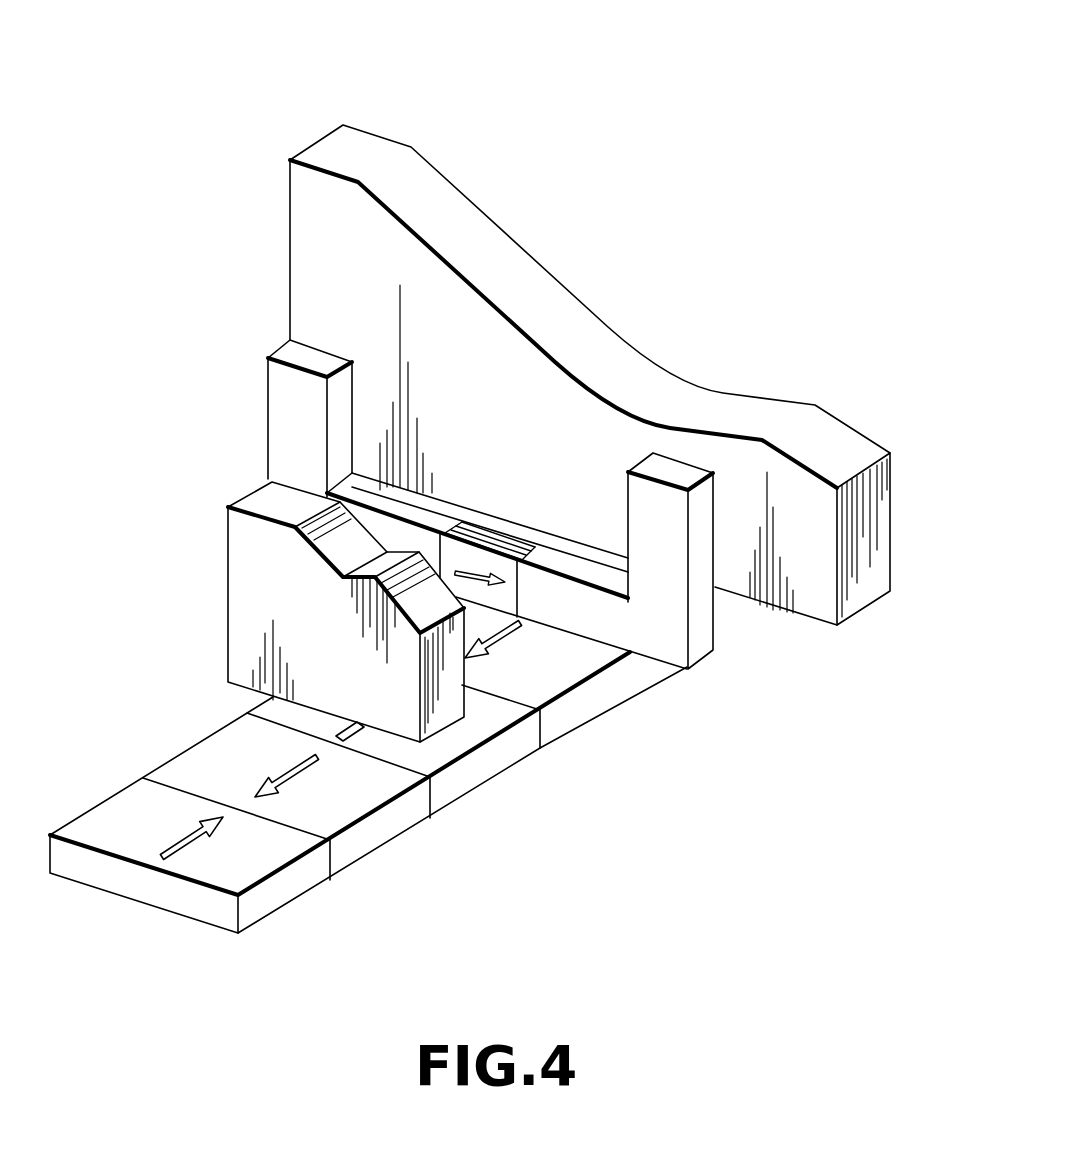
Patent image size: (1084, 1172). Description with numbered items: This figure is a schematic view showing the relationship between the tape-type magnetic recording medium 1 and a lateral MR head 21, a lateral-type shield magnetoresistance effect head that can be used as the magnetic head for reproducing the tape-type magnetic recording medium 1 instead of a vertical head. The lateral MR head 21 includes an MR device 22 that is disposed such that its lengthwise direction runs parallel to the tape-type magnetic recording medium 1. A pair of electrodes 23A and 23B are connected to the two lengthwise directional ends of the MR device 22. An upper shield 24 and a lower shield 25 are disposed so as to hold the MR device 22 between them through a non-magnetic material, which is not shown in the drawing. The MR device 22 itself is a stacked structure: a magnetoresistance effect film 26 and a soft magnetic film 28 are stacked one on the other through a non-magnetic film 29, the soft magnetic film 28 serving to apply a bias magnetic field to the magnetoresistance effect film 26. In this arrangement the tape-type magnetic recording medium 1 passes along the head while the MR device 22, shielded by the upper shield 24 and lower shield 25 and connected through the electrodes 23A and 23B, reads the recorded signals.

The lateral MR head 21 is at (719, 138).
The tape-type magnetic recording medium 1 is at (232, 830).
The upper shield 24 is at (333, 258).
The electrode 23A is at (285, 377).
The electrode 23B is at (663, 647).
The MR device 22 is at (581, 426).
The magnetoresistance effect film 26 is at (477, 525).
The soft magnetic film 28 is at (452, 530).
The non-magnetic film 29 is at (505, 577).
The lower shield 25 is at (275, 596).